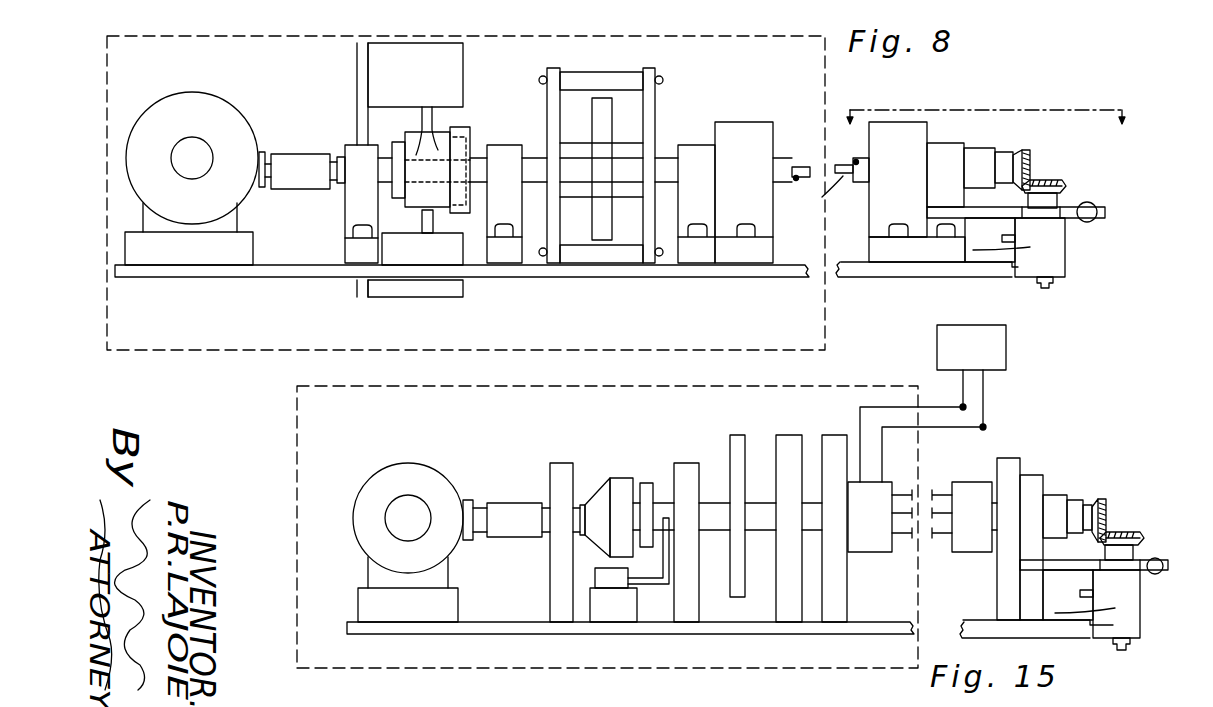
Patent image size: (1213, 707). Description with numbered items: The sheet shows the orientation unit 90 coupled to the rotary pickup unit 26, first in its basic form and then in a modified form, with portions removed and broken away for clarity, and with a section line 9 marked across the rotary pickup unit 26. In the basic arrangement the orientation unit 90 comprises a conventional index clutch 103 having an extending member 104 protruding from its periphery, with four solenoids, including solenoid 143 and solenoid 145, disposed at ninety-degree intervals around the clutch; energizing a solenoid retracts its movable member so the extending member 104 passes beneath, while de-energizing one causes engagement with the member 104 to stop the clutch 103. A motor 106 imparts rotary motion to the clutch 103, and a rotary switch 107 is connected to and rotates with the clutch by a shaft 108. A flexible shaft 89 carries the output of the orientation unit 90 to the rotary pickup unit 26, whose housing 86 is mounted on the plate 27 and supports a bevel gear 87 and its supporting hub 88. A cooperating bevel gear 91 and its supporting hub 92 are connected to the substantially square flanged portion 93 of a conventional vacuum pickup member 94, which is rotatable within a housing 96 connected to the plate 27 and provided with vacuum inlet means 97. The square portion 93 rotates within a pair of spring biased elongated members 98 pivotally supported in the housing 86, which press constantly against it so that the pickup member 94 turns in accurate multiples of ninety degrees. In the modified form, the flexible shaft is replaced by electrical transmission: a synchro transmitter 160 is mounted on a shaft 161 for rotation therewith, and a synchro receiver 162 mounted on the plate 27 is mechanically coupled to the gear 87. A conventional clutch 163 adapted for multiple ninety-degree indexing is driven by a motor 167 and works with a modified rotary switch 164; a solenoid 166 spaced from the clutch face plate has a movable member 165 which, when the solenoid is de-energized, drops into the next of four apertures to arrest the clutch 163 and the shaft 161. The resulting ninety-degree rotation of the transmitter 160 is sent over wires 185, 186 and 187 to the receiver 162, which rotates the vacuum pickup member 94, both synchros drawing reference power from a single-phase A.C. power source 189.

In FIG. 8, the motor 106 is at (217, 108).
In FIG. 8, the solenoid 143 is at (455, 91).
In FIG. 8, the index clutch 103 is at (412, 137).
In FIG. 8, the extending member 104 is at (437, 141).
In FIG. 8, the solenoid 145 is at (438, 241).
In FIG. 8, the shaft 108 is at (533, 157).
In FIG. 8, the rotary switch 107 is at (596, 120).
In FIG. 8, the flexible shaft 89 is at (803, 180).
In FIG. 8, the orientation unit 90 is at (826, 95).
In FIG. 8, the rotary pickup unit 26 is at (1000, 120).
In FIG. 8, the section indicator 9 is at (985, 130).
In FIG. 8, the housing 86 is at (913, 122).
In FIG. 8, the supporting hub 88 is at (1005, 150).
In FIG. 15, the supporting hub 88 is at (1076, 499).
In FIG. 8, the bevel gear 87 is at (1030, 157).
In FIG. 15, the bevel gear 87 is at (1104, 511).
In FIG. 8, the cooperating bevel gear 91 is at (1052, 183).
In FIG. 15, the cooperating bevel gear 91 is at (1134, 536).
In FIG. 8, the supporting hub 92 is at (1061, 207).
In FIG. 15, the supporting hub 92 is at (1100, 561).
In FIG. 8, the spring biased elongated member 98 is at (1103, 207).
In FIG. 15, the spring biased elongated member 98 is at (1165, 563).
In FIG. 8, the square flanged portion 93 is at (1018, 208).
In FIG. 15, the square flanged portion 93 is at (1140, 570).
In FIG. 8, the vacuum inlet means 97 is at (1003, 237).
In FIG. 15, the vacuum inlet means 97 is at (1081, 592).
In FIG. 8, the housing 96 is at (1066, 241).
In FIG. 15, the housing 96 is at (1141, 609).
In FIG. 8, the plate 27 is at (910, 278).
In FIG. 8, the vacuum pickup member 94 is at (1047, 289).
In FIG. 15, the vacuum pickup member 94 is at (1127, 644).
In FIG. 15, the motor 167 is at (443, 479).
In FIG. 15, the clutch 163 is at (618, 478).
In FIG. 15, the solenoid 166 is at (612, 569).
In FIG. 15, the movable member 165 is at (661, 538).
In FIG. 15, the rotary switch 164 is at (744, 437).
In FIG. 15, the shaft 161 is at (810, 500).
In FIG. 15, the wire 186 is at (893, 515).
In FIG. 15, the synchro transmitter 160 is at (863, 553).
In FIG. 15, the wire 185 is at (935, 491).
In FIG. 15, the wire 187 is at (940, 538).
In FIG. 15, the A.C. power source 189 is at (1006, 347).
In FIG. 15, the synchro receiver 162 is at (978, 553).